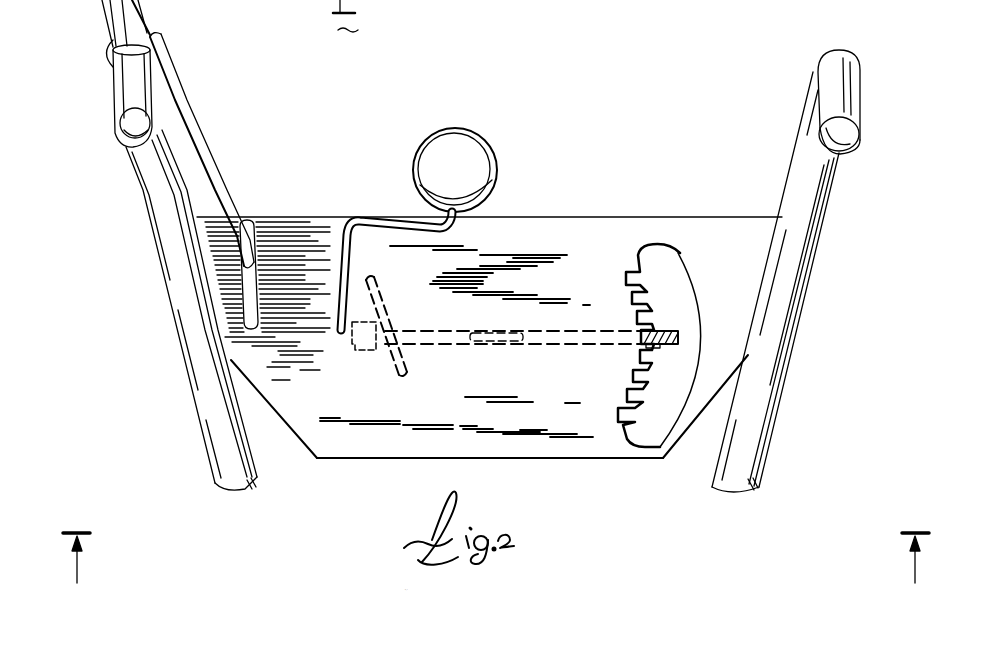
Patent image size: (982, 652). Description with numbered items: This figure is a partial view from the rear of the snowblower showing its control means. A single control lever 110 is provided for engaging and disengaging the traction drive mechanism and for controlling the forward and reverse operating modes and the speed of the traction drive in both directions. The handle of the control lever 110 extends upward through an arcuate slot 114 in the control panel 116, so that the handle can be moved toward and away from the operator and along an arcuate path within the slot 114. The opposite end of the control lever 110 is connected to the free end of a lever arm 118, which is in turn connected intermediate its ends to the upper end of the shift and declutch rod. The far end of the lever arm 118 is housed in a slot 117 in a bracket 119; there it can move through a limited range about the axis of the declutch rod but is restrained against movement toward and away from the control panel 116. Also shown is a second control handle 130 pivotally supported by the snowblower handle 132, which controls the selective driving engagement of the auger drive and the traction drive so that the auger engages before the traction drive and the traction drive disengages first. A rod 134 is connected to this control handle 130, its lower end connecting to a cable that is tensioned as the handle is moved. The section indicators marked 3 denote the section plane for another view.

The control lever 110 is at (668, 332).
The arcuate slot 114 is at (676, 258).
The control panel 116 is at (541, 243).
The slot 117 is at (388, 366).
The lever arm 118 is at (580, 345).
The bracket 119 is at (408, 367).
The second control handle 130 is at (122, 33).
The snowblower handle 132 is at (120, 137).
The rod 134 is at (218, 157).
The section line 3- 3 is at (496, 572).